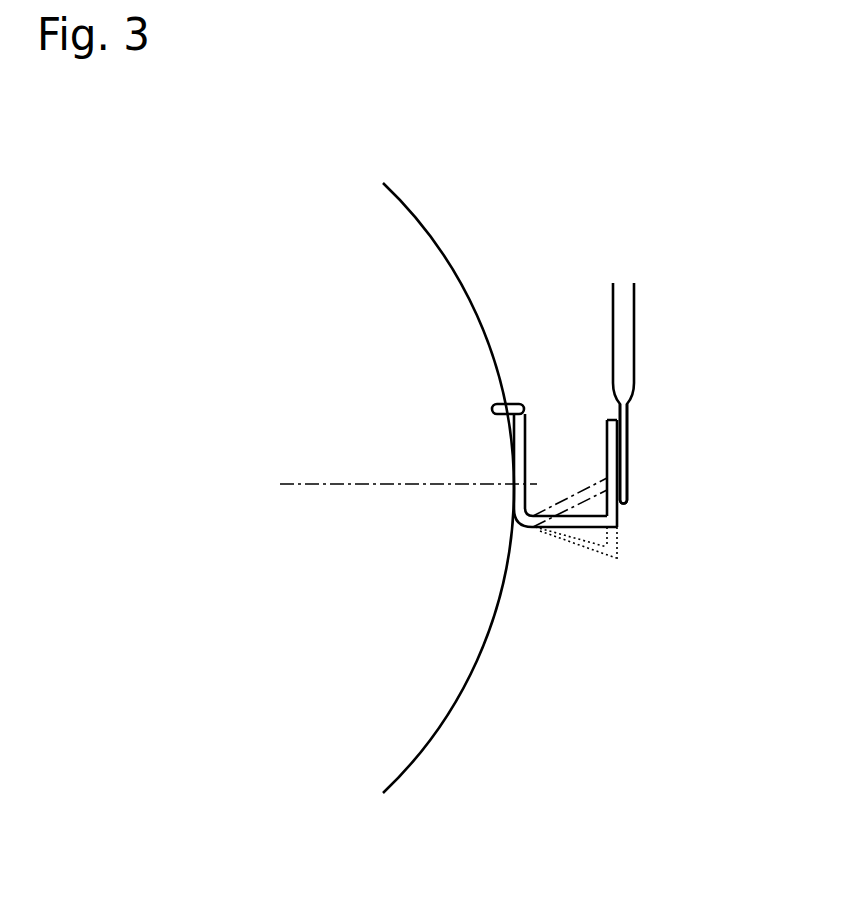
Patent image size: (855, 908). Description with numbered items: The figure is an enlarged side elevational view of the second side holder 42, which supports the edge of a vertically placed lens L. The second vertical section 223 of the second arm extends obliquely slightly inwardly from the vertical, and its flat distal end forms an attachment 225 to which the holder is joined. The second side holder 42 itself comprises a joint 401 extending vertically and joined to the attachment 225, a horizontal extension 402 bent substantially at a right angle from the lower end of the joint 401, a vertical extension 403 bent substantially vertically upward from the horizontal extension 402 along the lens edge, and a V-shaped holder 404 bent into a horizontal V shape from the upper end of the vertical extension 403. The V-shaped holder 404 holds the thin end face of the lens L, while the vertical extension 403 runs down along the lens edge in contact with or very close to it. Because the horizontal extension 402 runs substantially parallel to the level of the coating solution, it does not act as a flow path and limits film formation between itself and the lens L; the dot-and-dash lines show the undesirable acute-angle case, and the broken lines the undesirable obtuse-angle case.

The lens L is at (442, 648).
The second side holder 42 is at (627, 613).
The second vertical section 223 is at (630, 318).
The attachment 225 is at (627, 453).
The joint 401 is at (615, 474).
The horizontal extension 402 is at (597, 523).
The vertical extension 403 is at (514, 483).
The V-shaped holder 404 is at (492, 409).